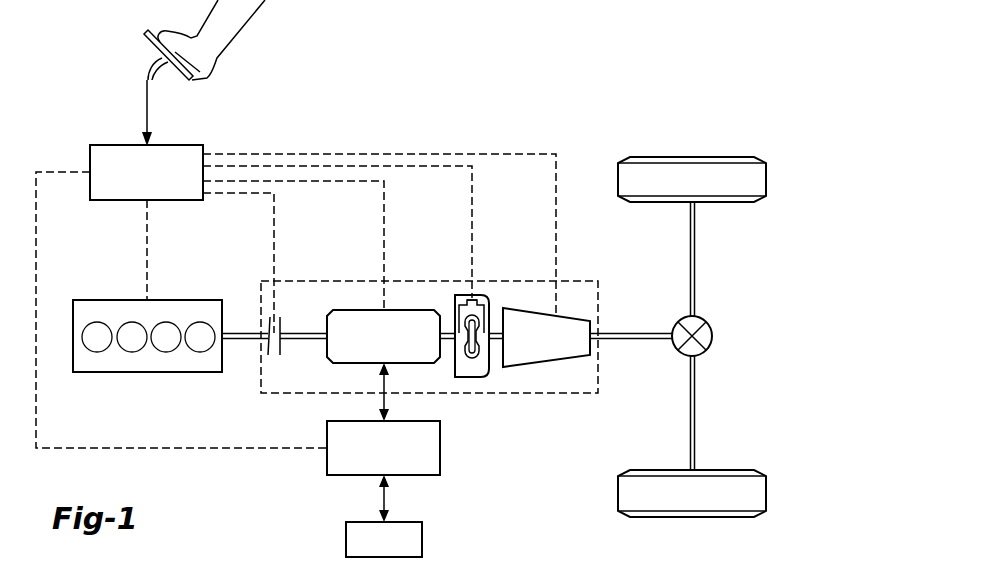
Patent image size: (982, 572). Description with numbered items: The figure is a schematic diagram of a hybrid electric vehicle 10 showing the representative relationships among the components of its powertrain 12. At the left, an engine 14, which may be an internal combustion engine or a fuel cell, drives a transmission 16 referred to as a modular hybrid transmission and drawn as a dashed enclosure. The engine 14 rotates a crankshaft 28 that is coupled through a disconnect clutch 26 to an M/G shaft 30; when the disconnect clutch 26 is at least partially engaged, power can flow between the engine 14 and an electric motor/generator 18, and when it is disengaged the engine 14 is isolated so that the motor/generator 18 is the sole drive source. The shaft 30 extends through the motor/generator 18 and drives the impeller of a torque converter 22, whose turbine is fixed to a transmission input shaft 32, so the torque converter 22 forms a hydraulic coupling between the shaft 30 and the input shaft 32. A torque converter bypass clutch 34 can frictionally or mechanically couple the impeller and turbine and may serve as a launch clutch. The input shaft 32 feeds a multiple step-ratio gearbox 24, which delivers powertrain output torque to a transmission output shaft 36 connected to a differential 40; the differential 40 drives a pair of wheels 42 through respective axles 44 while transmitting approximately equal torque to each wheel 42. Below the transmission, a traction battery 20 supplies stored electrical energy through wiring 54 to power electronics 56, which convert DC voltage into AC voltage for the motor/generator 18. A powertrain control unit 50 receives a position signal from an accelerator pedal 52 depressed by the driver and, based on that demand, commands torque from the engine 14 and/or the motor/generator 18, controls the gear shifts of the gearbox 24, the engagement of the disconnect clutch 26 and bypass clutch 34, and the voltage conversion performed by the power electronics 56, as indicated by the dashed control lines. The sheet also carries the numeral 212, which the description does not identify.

The hybrid electric vehicle 10 is at (601, 101).
The powertrain 12 is at (220, 481).
The engine 14 is at (89, 300).
The transmission 16 is at (416, 281).
The electric motor/generator 18 is at (345, 310).
The traction battery 20 is at (345, 541).
The torque converter 22 is at (470, 378).
The gearbox 24 is at (540, 367).
The disconnect clutch 26 is at (270, 355).
The crankshaft 28 is at (245, 333).
The M/G shaft 30 is at (308, 333).
The transmission input shaft 32 is at (495, 333).
The torque converter bypass clutch 34 is at (472, 298).
The transmission output shaft 36 is at (643, 333).
The differential 40 is at (712, 337).
The wheels 42 is at (693, 157).
The axles 44 is at (697, 258).
The powertrain control unit 50 is at (104, 145).
The accelerator pedal 52 is at (143, 44).
The wiring 54 is at (380, 500).
The power electronics 56 is at (441, 448).
The reference numeral 212 is at (607, 562).